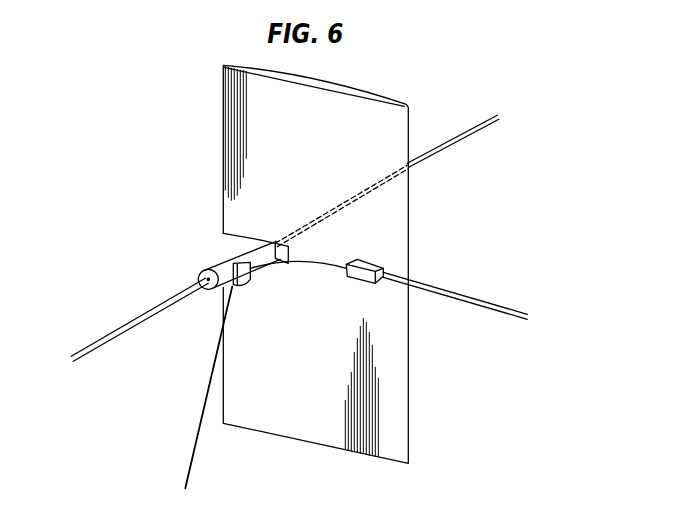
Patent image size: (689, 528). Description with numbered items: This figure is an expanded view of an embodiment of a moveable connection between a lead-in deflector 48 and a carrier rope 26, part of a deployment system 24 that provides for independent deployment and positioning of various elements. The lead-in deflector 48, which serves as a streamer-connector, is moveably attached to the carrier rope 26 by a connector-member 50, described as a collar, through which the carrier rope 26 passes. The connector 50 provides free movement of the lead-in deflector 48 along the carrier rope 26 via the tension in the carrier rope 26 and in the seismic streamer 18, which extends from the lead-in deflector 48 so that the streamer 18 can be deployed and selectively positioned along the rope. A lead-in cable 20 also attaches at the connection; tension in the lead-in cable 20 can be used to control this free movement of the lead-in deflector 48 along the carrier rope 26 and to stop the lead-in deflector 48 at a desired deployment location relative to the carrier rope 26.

The deployment system 24 is at (150, 151).
The lead-in deflector 48 is at (330, 150).
The connector-member 50 is at (217, 264).
The carrier rope 26 is at (106, 338).
The seismic streamer 18 is at (477, 299).
The lead-in cable 20 is at (197, 439).